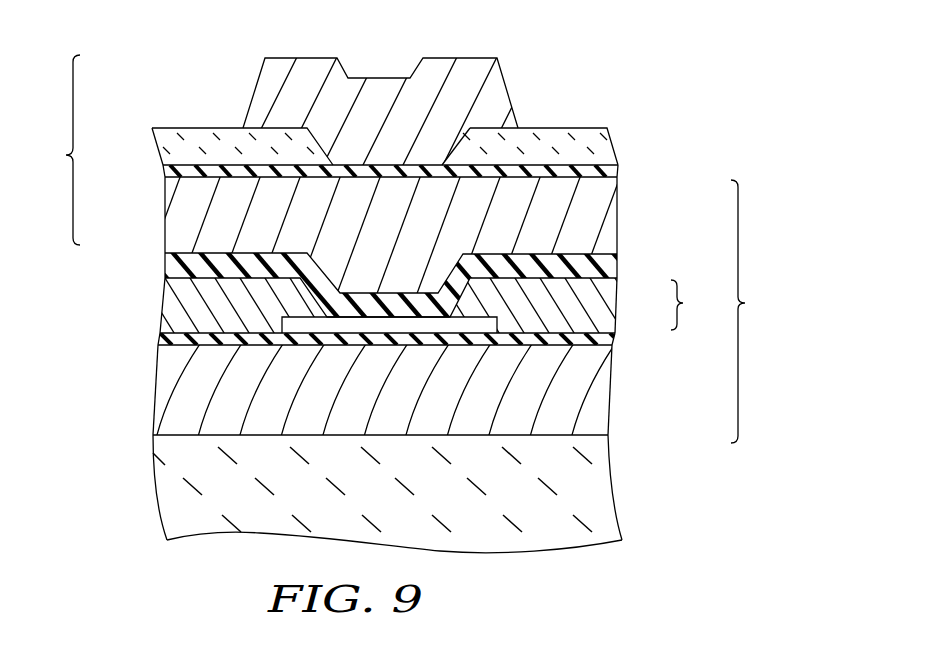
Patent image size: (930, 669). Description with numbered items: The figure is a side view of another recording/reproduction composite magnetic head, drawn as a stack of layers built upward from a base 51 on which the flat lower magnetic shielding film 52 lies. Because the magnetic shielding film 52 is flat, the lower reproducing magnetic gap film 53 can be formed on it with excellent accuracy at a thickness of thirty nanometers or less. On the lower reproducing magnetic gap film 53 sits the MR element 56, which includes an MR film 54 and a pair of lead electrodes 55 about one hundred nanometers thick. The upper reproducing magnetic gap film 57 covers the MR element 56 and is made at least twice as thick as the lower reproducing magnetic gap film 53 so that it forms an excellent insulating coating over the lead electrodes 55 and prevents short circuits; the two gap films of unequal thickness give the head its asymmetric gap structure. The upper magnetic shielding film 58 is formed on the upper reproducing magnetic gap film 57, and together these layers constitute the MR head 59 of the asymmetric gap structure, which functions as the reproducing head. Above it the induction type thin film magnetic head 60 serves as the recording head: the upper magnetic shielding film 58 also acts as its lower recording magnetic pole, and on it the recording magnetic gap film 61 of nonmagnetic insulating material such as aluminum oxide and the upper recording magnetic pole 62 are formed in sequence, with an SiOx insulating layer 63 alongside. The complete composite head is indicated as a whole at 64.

The substrate 51 is at (602, 503).
The magnetic shielding film 52 is at (585, 420).
The lower reproducing magnetic gap film 53 is at (613, 343).
The MR film 54 is at (478, 332).
The lead electrodes 55 is at (603, 287).
The MR element 56 is at (695, 305).
The upper reproducing magnetic gap film 57 is at (612, 263).
The upper magnetic shielding film 58 is at (612, 213).
The MR head of the asymmetric gap structure 59 is at (755, 311).
The induction type thin film magnetic head 60 is at (57, 150).
The recording magnetic gap film 61 is at (166, 170).
The upper recording magnetic pole 62 is at (276, 70).
The SiOx insulating layer 63 is at (172, 138).
The thin film device 64 is at (566, 85).